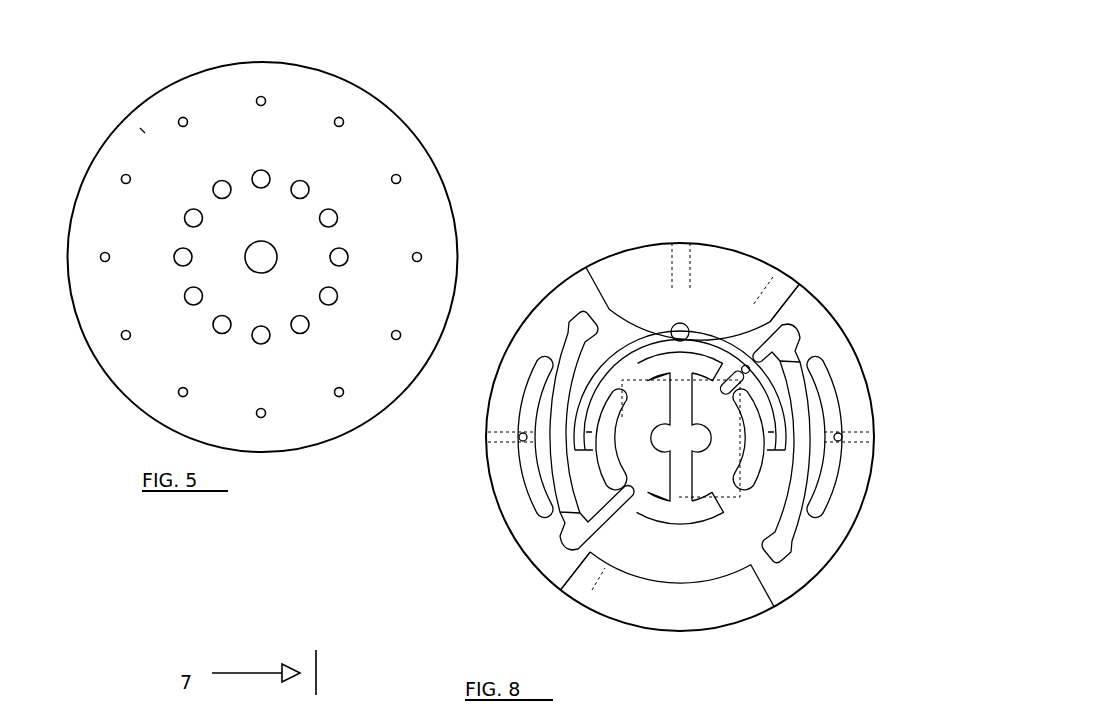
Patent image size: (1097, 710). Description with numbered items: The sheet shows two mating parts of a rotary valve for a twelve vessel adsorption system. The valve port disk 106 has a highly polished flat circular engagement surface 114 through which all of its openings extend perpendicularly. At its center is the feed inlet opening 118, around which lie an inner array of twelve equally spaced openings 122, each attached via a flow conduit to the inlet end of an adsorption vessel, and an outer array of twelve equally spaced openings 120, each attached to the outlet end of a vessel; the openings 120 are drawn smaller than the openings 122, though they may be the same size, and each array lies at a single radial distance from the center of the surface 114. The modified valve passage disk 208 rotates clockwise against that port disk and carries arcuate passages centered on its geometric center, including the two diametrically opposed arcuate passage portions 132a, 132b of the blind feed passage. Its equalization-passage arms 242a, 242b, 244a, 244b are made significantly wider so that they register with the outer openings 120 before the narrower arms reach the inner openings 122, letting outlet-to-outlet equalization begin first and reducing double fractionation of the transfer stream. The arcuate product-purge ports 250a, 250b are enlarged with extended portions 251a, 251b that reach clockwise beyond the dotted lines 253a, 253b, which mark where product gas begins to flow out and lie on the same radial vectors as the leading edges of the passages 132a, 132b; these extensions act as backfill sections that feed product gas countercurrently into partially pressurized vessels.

In FIG. 5, the valve port disk 106 is at (214, 65).
In FIG. 5, the engagement surface 114 is at (145, 133).
In FIG. 5, the feed inlet opening 118 is at (263, 241).
In FIG. 5, the outer array of openings 120 is at (421, 254).
In FIG. 5, the inner array of openings 122 is at (253, 339).
In FIG. 8, the valve passage disk 208 is at (488, 474).
In FIG. 8, the arcuate passage portion 132a is at (688, 358).
In FIG. 8, the arcuate passage portion 132b is at (673, 515).
In FIG. 8, the arm of equalization passage 242a is at (580, 327).
In FIG. 8, the arm of equalization passage 242b is at (784, 550).
In FIG. 8, the arm of equalization passage 244a is at (573, 540).
In FIG. 8, the arm of equalization passage 244b is at (798, 338).
In FIG. 8, the arcuate product-purge port 250a is at (623, 278).
In FIG. 8, the arcuate product-purge port 250b is at (668, 612).
In FIG. 8, the extended portion 251a is at (777, 293).
In FIG. 8, the extended portion 251b is at (586, 581).
In FIG. 8, the dotted line 253a is at (773, 277).
In FIG. 8, the dotted line 253b is at (592, 590).